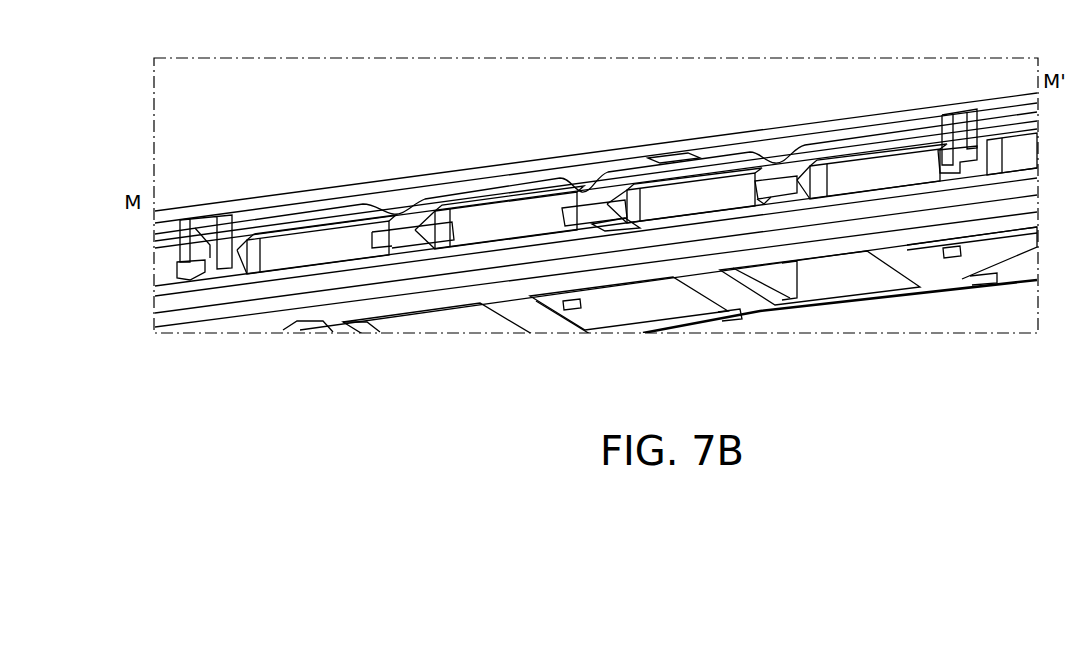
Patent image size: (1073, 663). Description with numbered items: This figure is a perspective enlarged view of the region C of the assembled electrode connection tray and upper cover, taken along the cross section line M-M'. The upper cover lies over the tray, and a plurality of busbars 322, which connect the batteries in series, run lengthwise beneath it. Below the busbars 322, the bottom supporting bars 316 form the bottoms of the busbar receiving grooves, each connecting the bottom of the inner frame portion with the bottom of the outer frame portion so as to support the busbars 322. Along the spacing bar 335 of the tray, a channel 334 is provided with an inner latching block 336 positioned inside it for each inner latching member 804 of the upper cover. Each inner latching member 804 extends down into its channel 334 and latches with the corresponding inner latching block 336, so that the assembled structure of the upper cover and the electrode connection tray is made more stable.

The busbar 322 is at (477, 193).
The channel 334 is at (176, 242).
The spacing bar 335 is at (178, 263).
The inner latching block 336 is at (263, 226).
The inner latching member 804 is at (203, 222).
The bottom supporting bar 316 is at (541, 322).
The region C is at (156, 302).